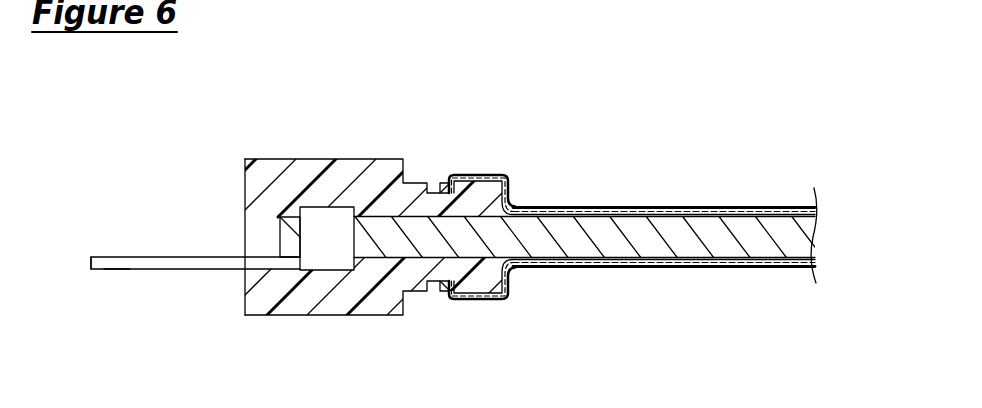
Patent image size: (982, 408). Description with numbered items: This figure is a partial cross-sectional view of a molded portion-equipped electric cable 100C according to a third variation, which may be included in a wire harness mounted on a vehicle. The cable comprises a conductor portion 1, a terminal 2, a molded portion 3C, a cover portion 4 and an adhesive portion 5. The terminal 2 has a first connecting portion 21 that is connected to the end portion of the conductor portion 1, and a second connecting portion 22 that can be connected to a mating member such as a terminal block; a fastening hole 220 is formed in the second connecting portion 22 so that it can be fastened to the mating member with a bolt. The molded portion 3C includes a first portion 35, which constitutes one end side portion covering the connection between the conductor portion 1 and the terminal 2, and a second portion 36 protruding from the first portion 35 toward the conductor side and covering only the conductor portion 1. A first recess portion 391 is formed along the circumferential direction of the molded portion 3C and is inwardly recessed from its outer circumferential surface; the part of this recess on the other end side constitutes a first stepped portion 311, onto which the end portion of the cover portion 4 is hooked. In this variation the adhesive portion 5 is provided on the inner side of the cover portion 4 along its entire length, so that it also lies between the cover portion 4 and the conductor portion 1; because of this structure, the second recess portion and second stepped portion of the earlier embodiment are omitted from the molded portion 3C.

The conductor portion 1 is at (813, 230).
The terminal 2 is at (175, 257).
The molded portion 3C is at (265, 158).
The cover portion 4 is at (700, 206).
The adhesive portion 5 is at (798, 206).
The first connecting portion 21 is at (318, 262).
The second connecting portion 22 is at (101, 257).
The first portion 35 is at (322, 137).
The second portion 36 is at (440, 150).
The molded portion-equipped electric cable 100C is at (771, 148).
The fastening hole 220 is at (118, 268).
The first stepped portion 311 is at (460, 286).
The first recess portion 391 is at (437, 287).